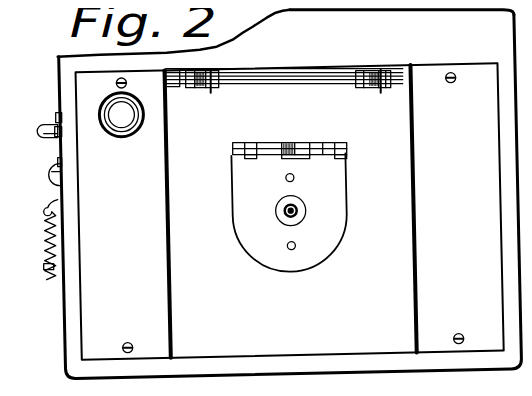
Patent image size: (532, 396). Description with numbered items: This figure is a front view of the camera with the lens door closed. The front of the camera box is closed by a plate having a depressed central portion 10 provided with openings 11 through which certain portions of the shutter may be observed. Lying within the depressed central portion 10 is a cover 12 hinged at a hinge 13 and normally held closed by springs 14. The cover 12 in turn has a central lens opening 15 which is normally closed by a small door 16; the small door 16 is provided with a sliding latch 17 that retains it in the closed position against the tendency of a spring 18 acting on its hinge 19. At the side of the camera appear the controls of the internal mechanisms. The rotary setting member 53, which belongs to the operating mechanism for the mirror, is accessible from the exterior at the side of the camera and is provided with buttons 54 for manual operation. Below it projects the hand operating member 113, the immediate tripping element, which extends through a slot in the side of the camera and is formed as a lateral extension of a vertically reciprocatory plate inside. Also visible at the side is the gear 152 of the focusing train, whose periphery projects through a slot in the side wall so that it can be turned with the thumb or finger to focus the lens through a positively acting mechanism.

The depressed central portion 10 is at (413, 160).
The openings 11 is at (524, 14).
The cover 12 is at (267, 213).
The hinge 13 is at (323, 77).
The springs 14 is at (376, 72).
The central lens opening 15 is at (348, 203).
The small door 16 is at (247, 213).
The sliding latch 17 is at (297, 206).
The spring 18 is at (291, 141).
The hinge 19 is at (338, 147).
The rotary setting member 53 is at (56, 120).
The buttons 54 is at (38, 138).
The hand operating member 113 is at (45, 268).
The gear 152 is at (39, 229).